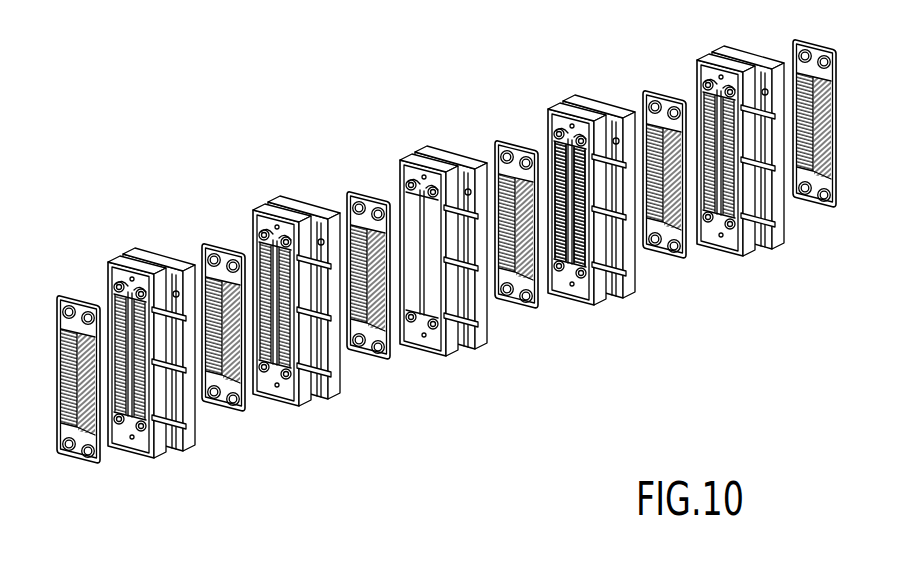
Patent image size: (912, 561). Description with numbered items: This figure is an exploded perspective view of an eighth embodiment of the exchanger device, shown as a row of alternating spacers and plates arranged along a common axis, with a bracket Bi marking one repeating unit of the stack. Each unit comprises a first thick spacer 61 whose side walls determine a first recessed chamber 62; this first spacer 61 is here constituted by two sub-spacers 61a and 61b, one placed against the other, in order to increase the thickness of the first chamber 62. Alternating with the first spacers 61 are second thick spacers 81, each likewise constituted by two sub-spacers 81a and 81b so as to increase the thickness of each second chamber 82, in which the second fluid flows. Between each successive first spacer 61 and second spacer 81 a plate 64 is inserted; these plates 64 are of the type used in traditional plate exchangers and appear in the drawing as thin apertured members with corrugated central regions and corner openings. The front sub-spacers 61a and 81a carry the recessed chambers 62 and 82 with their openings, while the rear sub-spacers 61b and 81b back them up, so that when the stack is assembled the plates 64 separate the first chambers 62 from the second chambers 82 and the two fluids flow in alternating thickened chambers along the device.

The block unit Bi is at (291, 182).
The first thick spacer 61 is at (252, 332).
The sub-spacer 61a is at (157, 446).
The sub-spacer 61b is at (186, 441).
The first recessed chamber 62 is at (222, 498).
The plate 64 is at (57, 450).
The second thick spacer 81 is at (518, 267).
The sub-spacer 81a is at (300, 326).
The sub-spacer 81b is at (330, 384).
The second chamber 82 is at (542, 152).